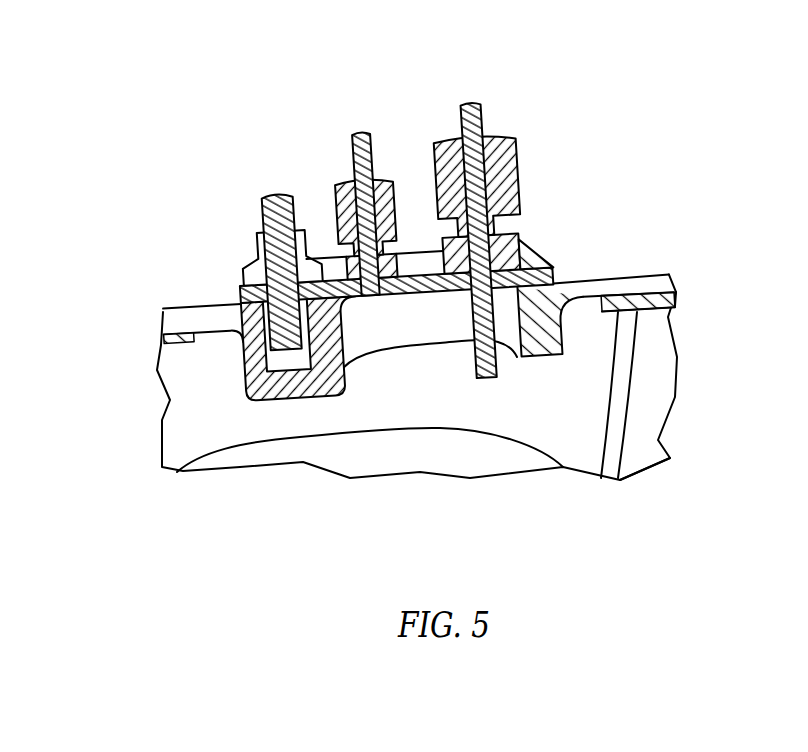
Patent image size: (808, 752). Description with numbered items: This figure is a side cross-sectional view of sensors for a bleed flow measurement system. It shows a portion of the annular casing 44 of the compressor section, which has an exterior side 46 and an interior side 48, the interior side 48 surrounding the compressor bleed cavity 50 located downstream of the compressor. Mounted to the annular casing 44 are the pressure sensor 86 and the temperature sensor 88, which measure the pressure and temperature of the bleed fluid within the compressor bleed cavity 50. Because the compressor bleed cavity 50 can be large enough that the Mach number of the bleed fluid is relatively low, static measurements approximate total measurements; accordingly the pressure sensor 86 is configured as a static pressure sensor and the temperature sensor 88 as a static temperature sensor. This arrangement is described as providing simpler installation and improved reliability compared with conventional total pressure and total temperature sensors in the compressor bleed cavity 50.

The annular casing 44 is at (686, 295).
The exterior side 46 is at (622, 289).
The interior side 48 is at (650, 362).
The compressor bleed cavity 50 is at (207, 443).
The pressure sensor 86 is at (344, 178).
The temperature sensor 88 is at (494, 132).